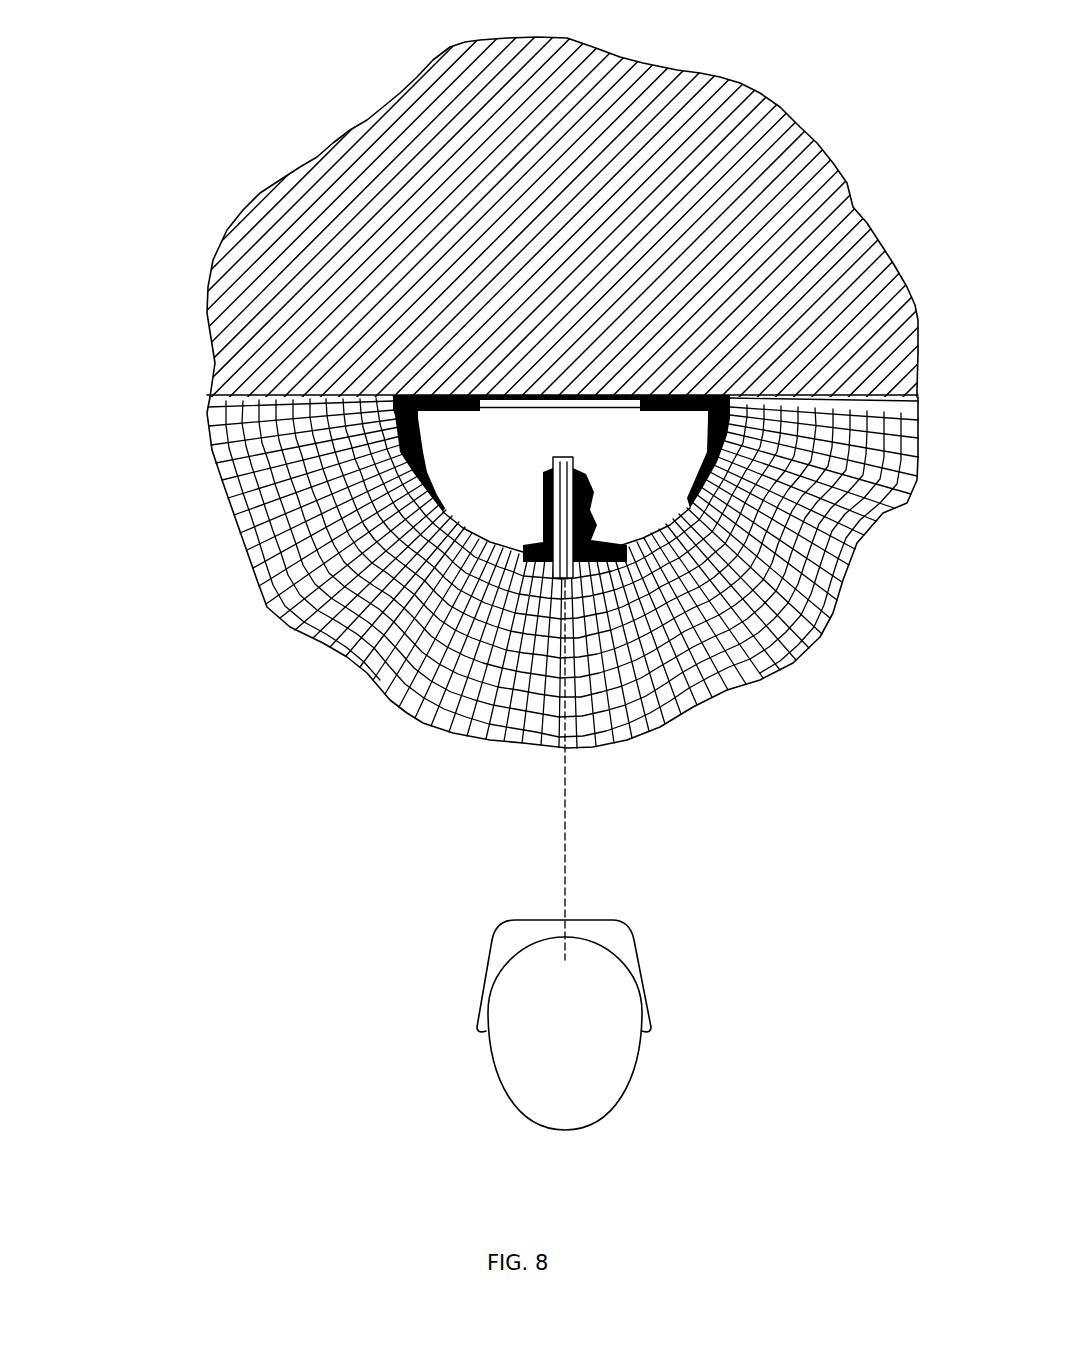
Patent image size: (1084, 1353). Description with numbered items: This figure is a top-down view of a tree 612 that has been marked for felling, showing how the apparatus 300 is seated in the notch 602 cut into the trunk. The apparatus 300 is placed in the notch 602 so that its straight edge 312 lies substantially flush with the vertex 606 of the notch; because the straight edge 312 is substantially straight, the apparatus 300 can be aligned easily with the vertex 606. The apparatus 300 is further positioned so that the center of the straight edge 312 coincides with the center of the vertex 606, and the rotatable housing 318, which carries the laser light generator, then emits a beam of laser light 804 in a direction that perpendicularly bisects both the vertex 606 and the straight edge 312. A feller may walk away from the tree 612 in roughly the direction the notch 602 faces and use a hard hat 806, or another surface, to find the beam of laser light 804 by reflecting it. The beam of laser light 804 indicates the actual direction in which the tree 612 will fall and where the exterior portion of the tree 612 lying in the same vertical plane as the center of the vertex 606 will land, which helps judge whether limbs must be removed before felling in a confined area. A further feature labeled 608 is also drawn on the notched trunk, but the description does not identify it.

The tree 612 is at (855, 207).
The notch 602 is at (173, 402).
The vertex 606 is at (232, 396).
The porous mesh body 608 is at (267, 522).
The straight edge 312 is at (527, 397).
The apparatus 300 is at (483, 512).
The rotatable housing 318 is at (569, 566).
The beam of laser light 804 is at (571, 832).
The hard hat 806 is at (630, 938).